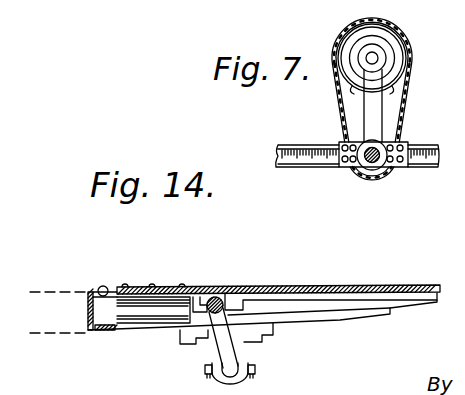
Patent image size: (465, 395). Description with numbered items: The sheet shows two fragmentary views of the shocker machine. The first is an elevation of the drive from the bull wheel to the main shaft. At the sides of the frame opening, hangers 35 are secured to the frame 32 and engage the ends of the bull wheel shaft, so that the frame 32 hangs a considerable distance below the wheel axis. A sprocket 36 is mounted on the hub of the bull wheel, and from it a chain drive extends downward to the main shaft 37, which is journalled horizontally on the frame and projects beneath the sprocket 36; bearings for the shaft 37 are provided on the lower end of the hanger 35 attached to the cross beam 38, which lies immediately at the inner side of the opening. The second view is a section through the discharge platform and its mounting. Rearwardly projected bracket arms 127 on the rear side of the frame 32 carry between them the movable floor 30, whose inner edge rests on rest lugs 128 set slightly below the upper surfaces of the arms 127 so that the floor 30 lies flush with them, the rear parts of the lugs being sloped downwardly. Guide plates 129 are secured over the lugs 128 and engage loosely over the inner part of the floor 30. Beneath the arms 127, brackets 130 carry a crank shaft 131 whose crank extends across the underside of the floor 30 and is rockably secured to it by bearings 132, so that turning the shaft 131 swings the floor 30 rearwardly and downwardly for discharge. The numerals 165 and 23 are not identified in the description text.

In FIG. 7, the sprocket 36 is at (388, 40).
In FIG. 7, the hangers 35 is at (380, 92).
In FIG. 7, the cross beam 38 is at (302, 163).
In FIG. 7, the main shaft 37 is at (382, 166).
In FIG. 7, the scale 165 is at (453, 116).
In FIG. 7, the frame 23 is at (458, 205).
In FIG. 14, the frame 32 is at (88, 310).
In FIG. 14, the movable floor 30 is at (268, 285).
In FIG. 14, the guide plates 129 is at (142, 285).
In FIG. 14, the rest lugs 128 is at (140, 302).
In FIG. 14, the bracket arms 127 is at (348, 317).
In FIG. 14, the bearings 132 is at (223, 297).
In FIG. 14, the crank shaft 131 is at (223, 345).
In FIG. 14, the brackets 130 is at (246, 347).